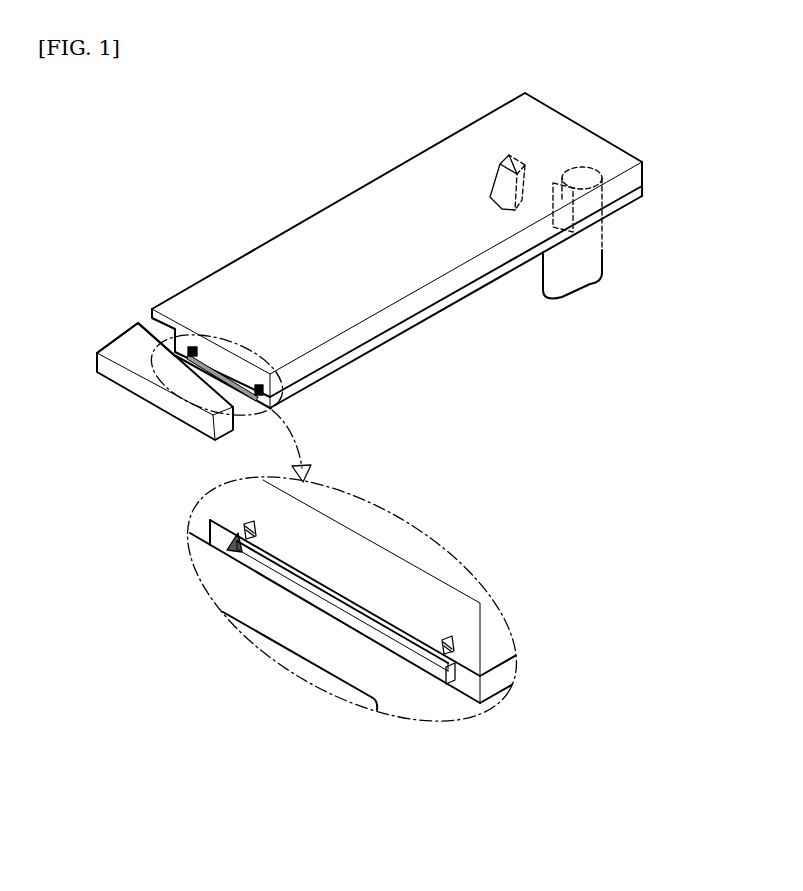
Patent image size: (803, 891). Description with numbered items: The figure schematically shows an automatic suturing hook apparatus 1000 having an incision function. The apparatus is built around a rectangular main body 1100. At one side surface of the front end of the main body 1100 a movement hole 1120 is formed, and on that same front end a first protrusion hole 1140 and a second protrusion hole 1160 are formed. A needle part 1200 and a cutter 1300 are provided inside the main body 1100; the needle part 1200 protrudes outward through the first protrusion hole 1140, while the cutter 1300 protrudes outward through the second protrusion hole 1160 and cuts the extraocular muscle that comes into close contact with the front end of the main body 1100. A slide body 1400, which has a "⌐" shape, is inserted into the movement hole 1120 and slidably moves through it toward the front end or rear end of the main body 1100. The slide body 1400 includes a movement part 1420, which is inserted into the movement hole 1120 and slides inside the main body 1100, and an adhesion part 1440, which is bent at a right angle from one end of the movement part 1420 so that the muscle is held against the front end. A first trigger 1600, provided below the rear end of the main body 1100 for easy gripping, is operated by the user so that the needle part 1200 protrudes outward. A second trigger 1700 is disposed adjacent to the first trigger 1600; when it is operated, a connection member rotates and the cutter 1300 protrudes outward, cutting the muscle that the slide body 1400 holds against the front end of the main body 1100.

The automatic suturing hook apparatus 1000 is at (163, 140).
The main body 1100 is at (288, 247).
The movement hole 1120 is at (150, 319).
The first protrusion hole 1140 is at (250, 532).
The second protrusion hole 1160 is at (402, 640).
The needle part 1200 is at (237, 542).
The cutter 1300 is at (320, 605).
The slide body 1400 is at (158, 480).
The movement part 1420 is at (127, 336).
The adhesion part 1440 is at (133, 378).
The first trigger 1600 is at (500, 178).
The second trigger 1700 is at (557, 215).